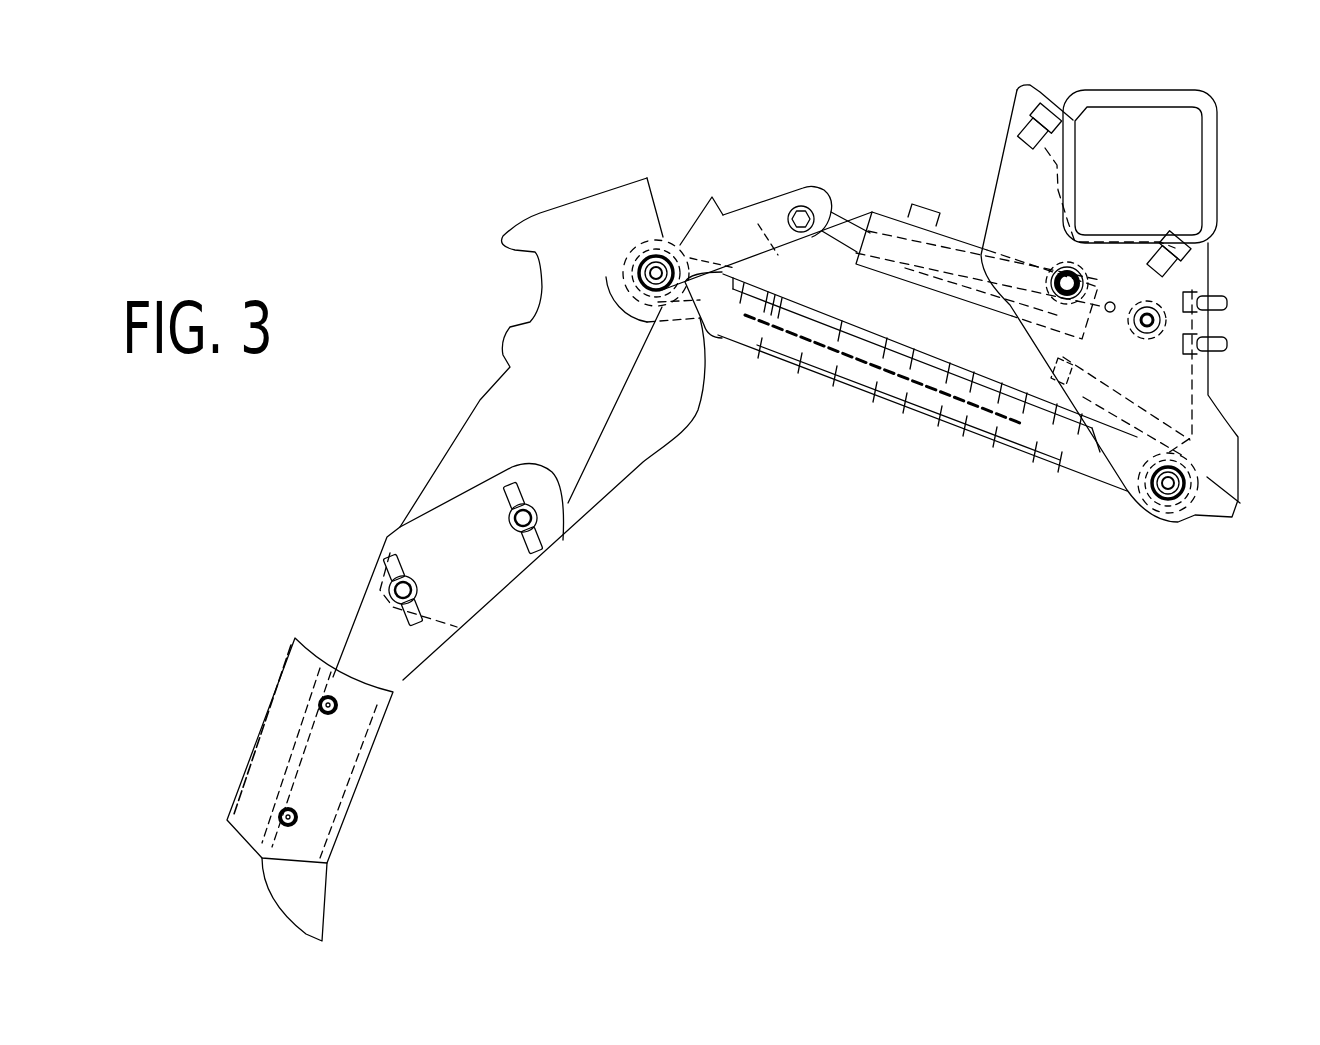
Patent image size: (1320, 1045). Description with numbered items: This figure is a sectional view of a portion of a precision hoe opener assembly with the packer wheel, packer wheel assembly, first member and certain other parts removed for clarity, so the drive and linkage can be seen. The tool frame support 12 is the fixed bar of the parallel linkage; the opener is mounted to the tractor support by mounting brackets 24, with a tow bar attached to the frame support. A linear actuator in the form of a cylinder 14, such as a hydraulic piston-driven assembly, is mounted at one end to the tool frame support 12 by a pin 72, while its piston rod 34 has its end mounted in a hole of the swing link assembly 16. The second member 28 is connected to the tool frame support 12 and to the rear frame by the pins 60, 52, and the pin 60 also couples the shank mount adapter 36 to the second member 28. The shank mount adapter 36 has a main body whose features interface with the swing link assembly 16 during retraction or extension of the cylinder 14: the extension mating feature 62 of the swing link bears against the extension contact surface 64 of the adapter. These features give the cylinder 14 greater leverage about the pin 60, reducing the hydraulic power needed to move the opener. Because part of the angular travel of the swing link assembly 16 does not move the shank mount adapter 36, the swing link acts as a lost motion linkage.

The frame support 12 is at (1018, 87).
The cylinder 14 is at (953, 263).
The swing link assembly 16 is at (733, 230).
The mounting brackets 24 is at (1207, 170).
The second member 28 is at (990, 430).
The piston rod 34 is at (848, 227).
The shank mount adapter 36 is at (597, 462).
The pin 52 is at (1163, 510).
The pin 60 is at (637, 257).
The extension mating feature 62 is at (698, 227).
The extension contact surface 64 is at (662, 240).
The pin 72 is at (1147, 322).